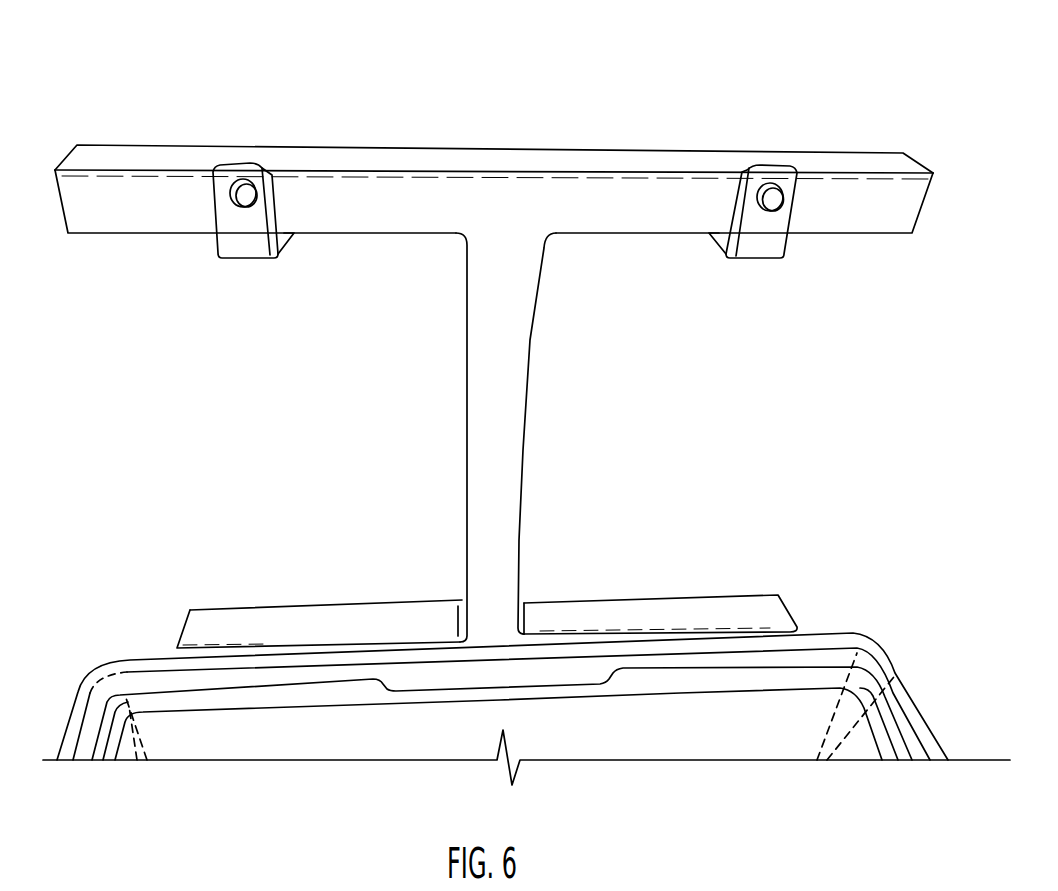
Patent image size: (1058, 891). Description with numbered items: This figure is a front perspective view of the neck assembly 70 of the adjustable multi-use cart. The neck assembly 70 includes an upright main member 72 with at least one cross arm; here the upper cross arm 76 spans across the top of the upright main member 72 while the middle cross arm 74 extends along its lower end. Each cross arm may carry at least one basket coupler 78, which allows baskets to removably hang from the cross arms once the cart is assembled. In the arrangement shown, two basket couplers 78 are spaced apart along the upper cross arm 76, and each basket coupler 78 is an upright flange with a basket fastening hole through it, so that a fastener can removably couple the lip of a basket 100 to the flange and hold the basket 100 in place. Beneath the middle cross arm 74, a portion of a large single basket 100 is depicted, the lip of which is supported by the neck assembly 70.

The neck assembly 70 is at (393, 112).
The upright main member 72 is at (510, 425).
The middle cross arm 74 is at (353, 628).
The upper cross arm 76 is at (675, 200).
The basket coupler 78 is at (245, 240).
The basket 100 is at (897, 620).